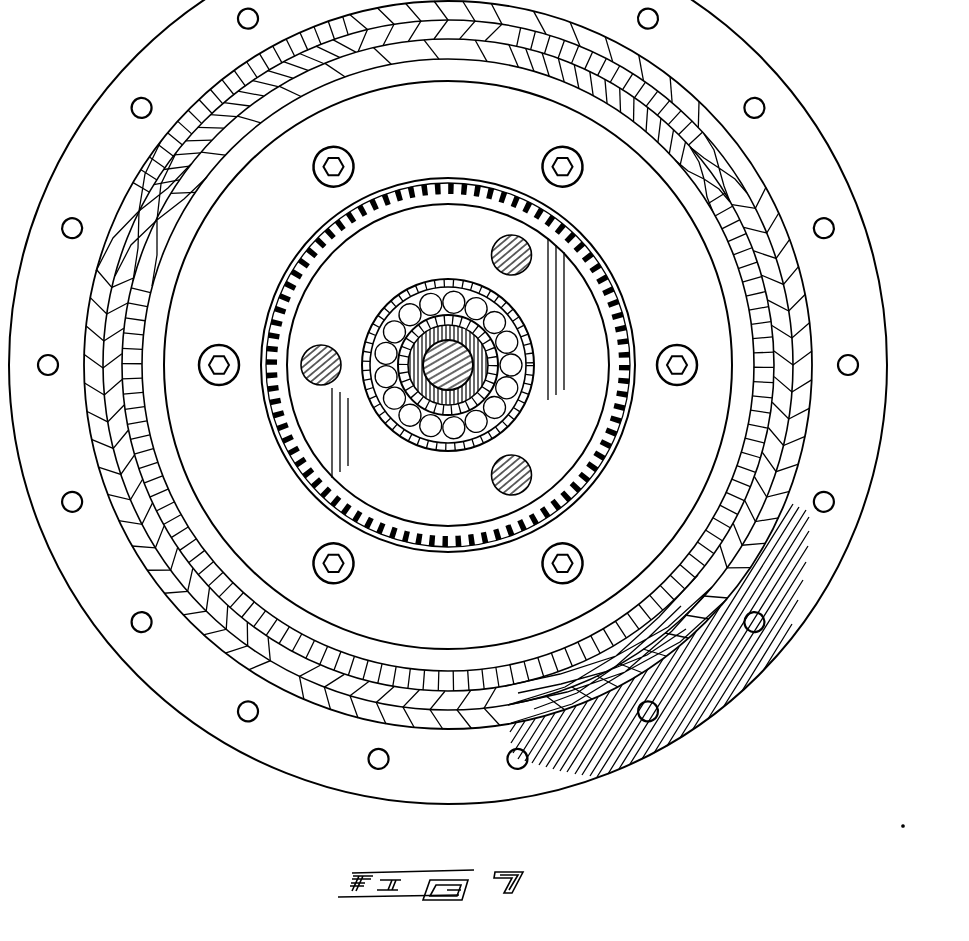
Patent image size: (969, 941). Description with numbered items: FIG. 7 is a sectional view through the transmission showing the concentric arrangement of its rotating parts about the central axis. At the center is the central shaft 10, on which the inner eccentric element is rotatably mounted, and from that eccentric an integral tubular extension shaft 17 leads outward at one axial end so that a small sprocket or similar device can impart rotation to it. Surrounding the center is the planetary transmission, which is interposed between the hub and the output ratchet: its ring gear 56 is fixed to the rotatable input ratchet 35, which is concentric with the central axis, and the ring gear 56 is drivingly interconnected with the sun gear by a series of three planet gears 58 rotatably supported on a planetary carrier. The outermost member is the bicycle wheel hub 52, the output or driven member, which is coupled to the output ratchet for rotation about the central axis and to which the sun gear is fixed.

The central shaft 10 is at (441, 388).
The tubular extension shaft 17 is at (474, 386).
The input ratchet 35 is at (641, 524).
The bicycle wheel hub 52 is at (790, 157).
The ring gear 56 is at (418, 178).
The planet gears 58 is at (494, 250).